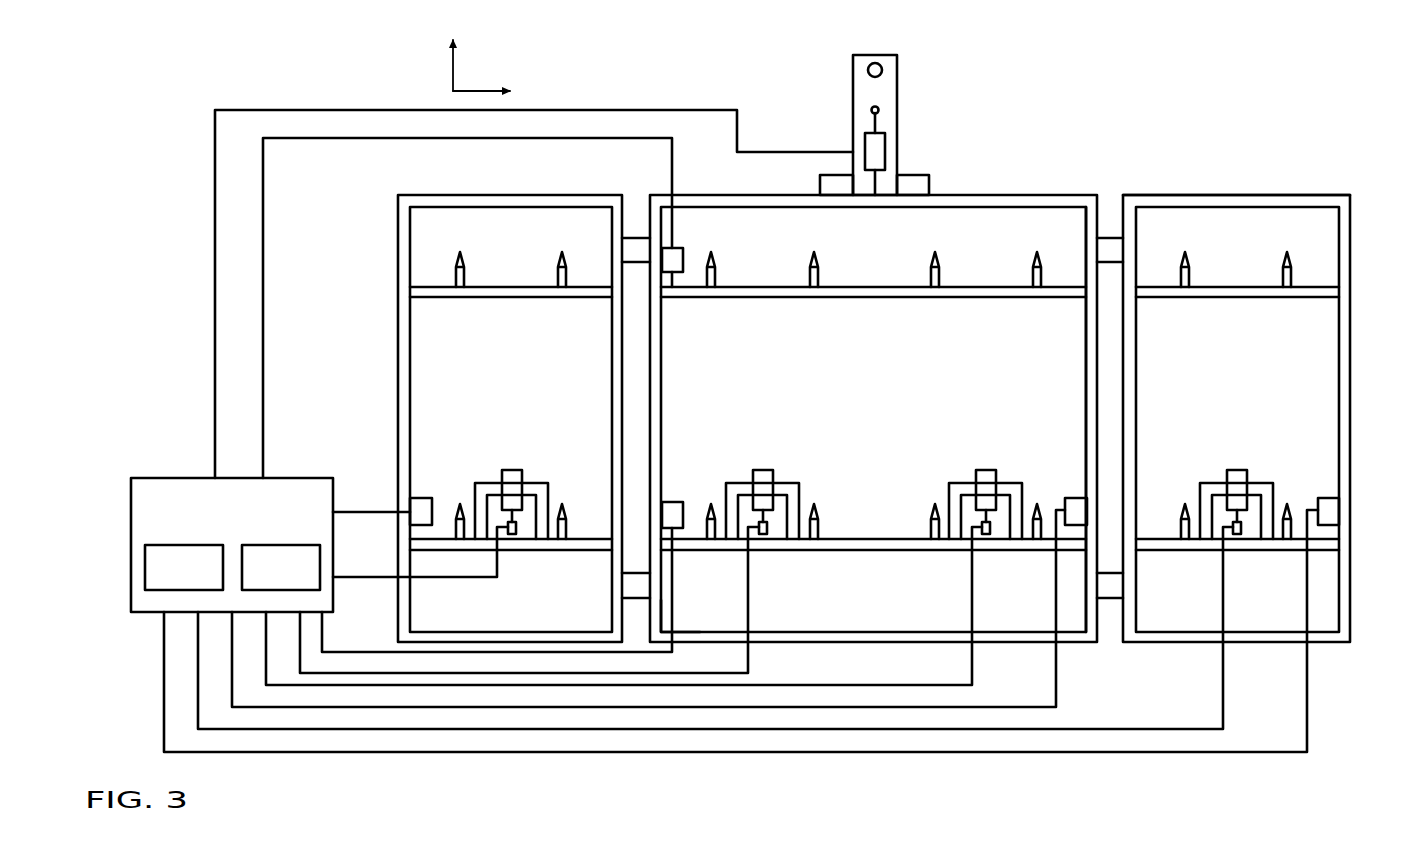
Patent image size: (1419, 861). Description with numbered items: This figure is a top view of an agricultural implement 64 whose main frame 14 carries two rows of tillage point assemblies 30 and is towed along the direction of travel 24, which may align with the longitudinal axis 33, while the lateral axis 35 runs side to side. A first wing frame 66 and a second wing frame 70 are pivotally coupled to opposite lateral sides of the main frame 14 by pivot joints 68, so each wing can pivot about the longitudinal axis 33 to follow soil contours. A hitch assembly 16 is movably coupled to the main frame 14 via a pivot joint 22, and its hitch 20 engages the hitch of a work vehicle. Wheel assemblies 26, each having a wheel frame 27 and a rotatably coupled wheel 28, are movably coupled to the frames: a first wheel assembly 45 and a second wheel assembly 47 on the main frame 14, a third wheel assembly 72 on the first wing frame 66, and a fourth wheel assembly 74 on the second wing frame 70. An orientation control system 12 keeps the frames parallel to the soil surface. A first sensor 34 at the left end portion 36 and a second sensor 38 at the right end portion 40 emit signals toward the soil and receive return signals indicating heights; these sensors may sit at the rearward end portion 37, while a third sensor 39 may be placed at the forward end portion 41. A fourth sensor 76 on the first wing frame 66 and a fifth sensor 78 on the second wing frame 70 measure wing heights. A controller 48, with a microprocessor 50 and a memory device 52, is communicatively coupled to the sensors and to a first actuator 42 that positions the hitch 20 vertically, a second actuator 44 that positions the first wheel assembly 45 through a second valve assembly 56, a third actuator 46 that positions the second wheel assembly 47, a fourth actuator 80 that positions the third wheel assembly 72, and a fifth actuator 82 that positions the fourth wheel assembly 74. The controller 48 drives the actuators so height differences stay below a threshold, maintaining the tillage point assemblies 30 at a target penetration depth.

The orientation control system 12 is at (188, 420).
The main frame 14 is at (710, 434).
The hitch assembly 16 is at (919, 110).
The hitch 20 is at (877, 62).
The pivot joint 22 is at (930, 185).
The direction of travel 24 is at (430, 65).
The wheel assembly 26 is at (912, 467).
The wheel frame 27 is at (548, 500).
The wheel 28 is at (512, 470).
The tillage point assembly 30 is at (550, 277).
The longitudinal axis 33 is at (453, 68).
The first sensor 34 is at (672, 500).
The lateral axis 35 is at (475, 91).
The left end portion 36 is at (690, 355).
The rearward end portion 37 is at (670, 618).
The second sensor 38 is at (1075, 527).
The third sensor 39 is at (678, 272).
The right end portion 40 is at (1067, 390).
The forward end portion 41 is at (675, 258).
The first actuator 42 is at (890, 150).
The second actuator 44 is at (767, 534).
The first wheel assembly 45 is at (770, 440).
The third actuator 46 is at (990, 534).
The second wheel assembly 47 is at (1000, 440).
The controller 48 is at (232, 527).
The microprocessor 50 is at (145, 567).
The memory device 52 is at (320, 570).
The second valve assembly 56 is at (890, 465).
The agricultural implement 64 is at (1235, 120).
The first wing frame 66 is at (398, 300).
The pivot joint 68 is at (635, 238).
The second wing frame 70 is at (1351, 300).
The third wheel assembly 72 is at (505, 445).
The fourth wheel assembly 74 is at (1230, 440).
The fourth sensor 76 is at (412, 498).
The fifth sensor 78 is at (1328, 527).
The fourth actuator 80 is at (516, 534).
The fifth actuator 82 is at (1242, 534).